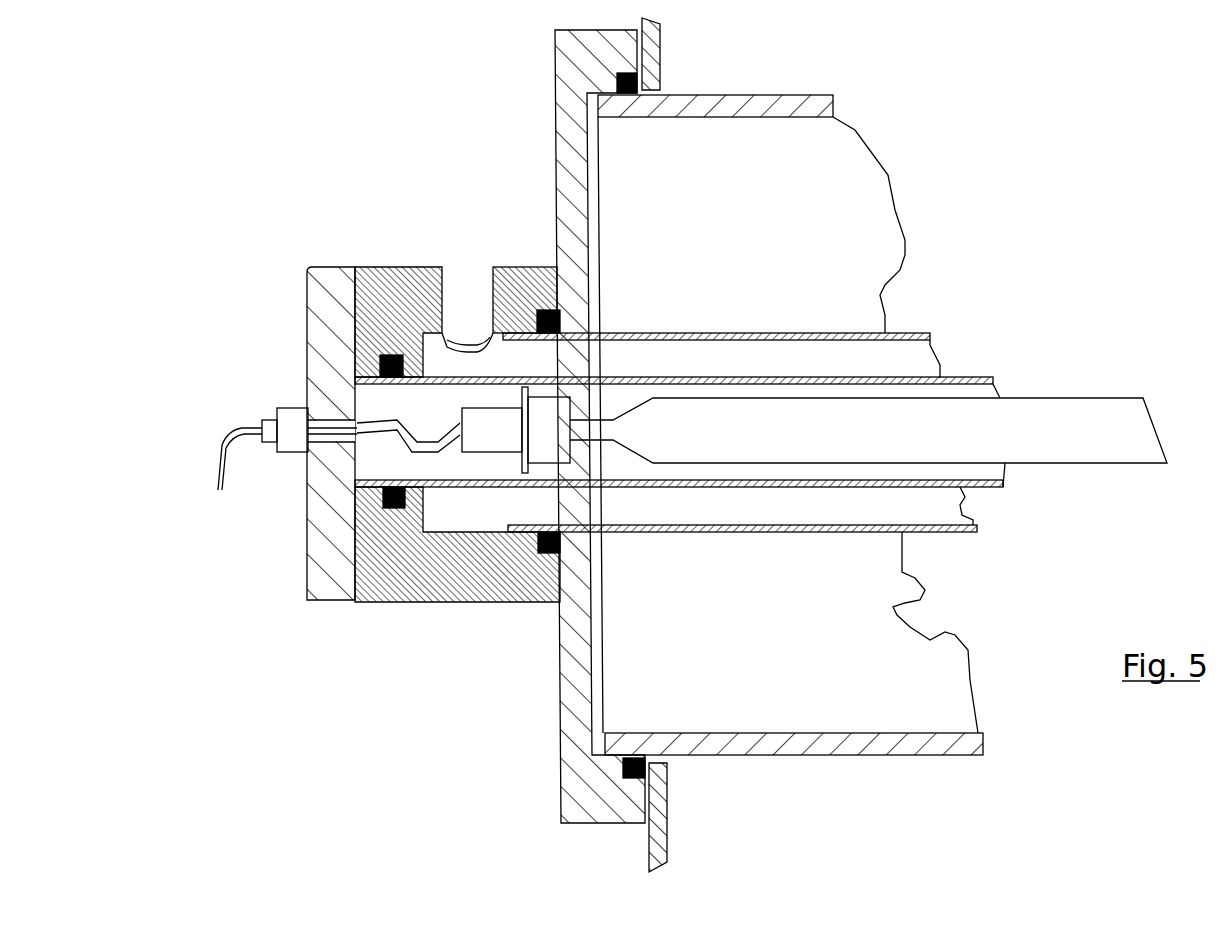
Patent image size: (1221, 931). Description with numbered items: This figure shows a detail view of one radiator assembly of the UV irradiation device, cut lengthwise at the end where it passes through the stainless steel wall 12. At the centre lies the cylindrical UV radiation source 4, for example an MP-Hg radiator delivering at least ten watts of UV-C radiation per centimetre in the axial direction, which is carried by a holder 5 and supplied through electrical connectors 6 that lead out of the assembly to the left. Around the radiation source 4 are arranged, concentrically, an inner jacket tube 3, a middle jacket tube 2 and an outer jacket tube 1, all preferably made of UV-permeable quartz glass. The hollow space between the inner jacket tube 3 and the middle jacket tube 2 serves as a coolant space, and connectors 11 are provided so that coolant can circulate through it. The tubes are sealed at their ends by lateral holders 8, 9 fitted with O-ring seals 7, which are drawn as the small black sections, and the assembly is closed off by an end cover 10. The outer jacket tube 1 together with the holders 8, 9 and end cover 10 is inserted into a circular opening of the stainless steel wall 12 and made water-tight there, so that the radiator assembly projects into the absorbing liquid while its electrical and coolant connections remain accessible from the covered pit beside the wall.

The outer jacket tube 1 is at (833, 97).
The middle jacket tube 2 is at (933, 333).
The inner jacket tube 3 is at (993, 378).
The UV radiation source 4 is at (1143, 398).
The holder 5 is at (520, 397).
The electrical connectors 6 is at (447, 422).
The O-ring seals 7 is at (395, 497).
The lateral holder 8 is at (555, 72).
The lateral holder 9 is at (400, 267).
The end cover 10 is at (305, 283).
The connectors 11 is at (523, 388).
The stainless steel wall 12 is at (658, 60).